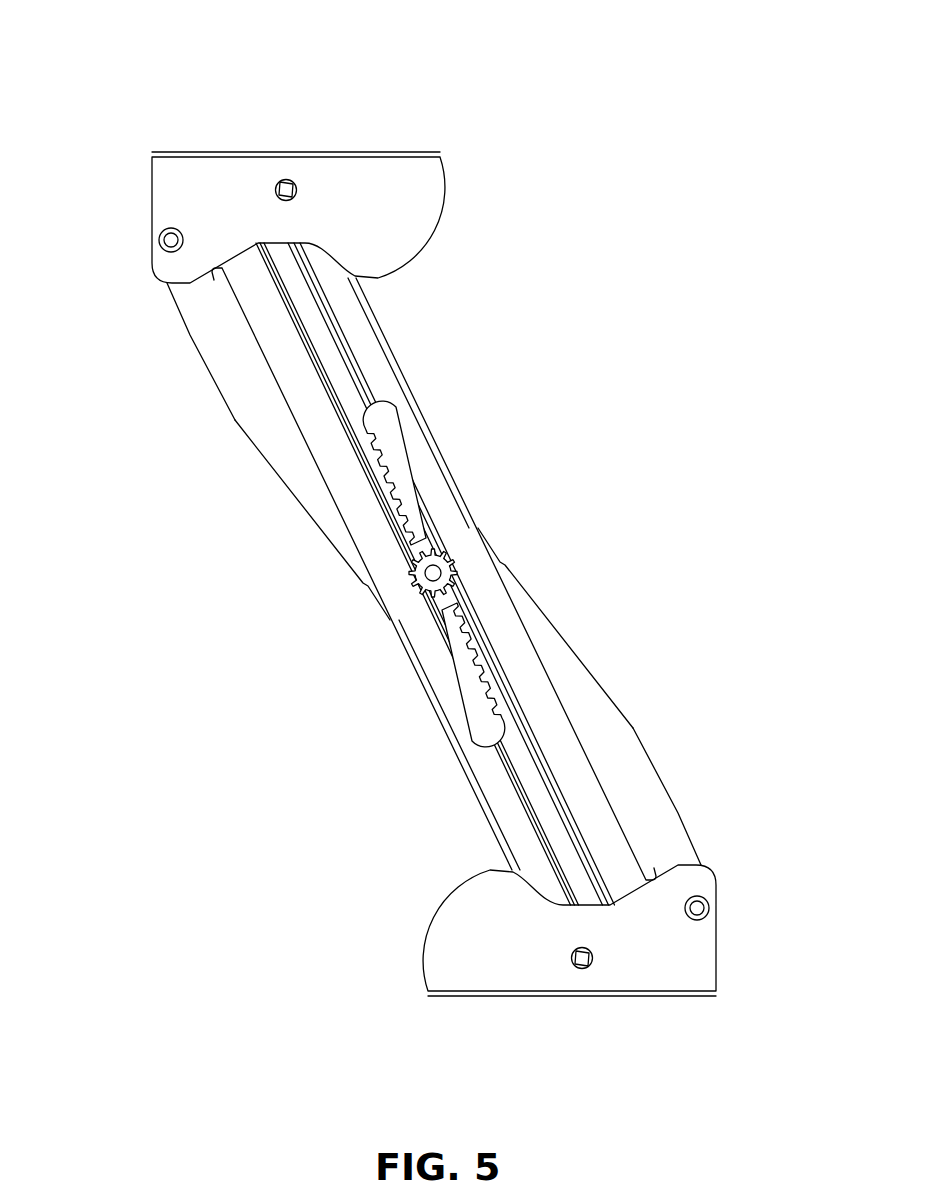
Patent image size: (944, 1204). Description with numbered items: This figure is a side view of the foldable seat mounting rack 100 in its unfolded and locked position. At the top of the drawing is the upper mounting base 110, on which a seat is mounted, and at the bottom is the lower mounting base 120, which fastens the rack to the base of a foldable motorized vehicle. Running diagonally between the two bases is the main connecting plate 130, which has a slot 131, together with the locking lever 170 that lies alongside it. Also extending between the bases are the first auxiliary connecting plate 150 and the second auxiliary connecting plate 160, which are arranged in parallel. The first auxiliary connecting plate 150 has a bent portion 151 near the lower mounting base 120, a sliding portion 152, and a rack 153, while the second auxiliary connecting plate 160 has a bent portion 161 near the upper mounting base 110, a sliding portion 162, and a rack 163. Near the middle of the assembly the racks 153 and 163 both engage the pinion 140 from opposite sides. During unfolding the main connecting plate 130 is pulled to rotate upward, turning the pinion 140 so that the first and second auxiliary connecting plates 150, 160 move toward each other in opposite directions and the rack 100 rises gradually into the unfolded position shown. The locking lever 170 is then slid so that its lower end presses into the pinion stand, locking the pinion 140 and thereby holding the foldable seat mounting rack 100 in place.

The foldable seat mounting rack 100 is at (80, 40).
The upper mounting base 110 is at (340, 195).
The lower mounting base 120 is at (673, 955).
The main connecting plate 130 is at (473, 760).
The slot 131 is at (528, 800).
The pinion 140 is at (420, 582).
The first auxiliary connecting plate 150 is at (643, 683).
The bent portion 151 is at (665, 830).
The sliding portion 152 is at (510, 600).
The rack 153 is at (398, 492).
The second auxiliary connecting plate 160 is at (235, 451).
The bent portion 161 is at (205, 317).
The sliding portion 162 is at (326, 509).
The rack 163 is at (450, 645).
The locking lever 170 is at (330, 355).